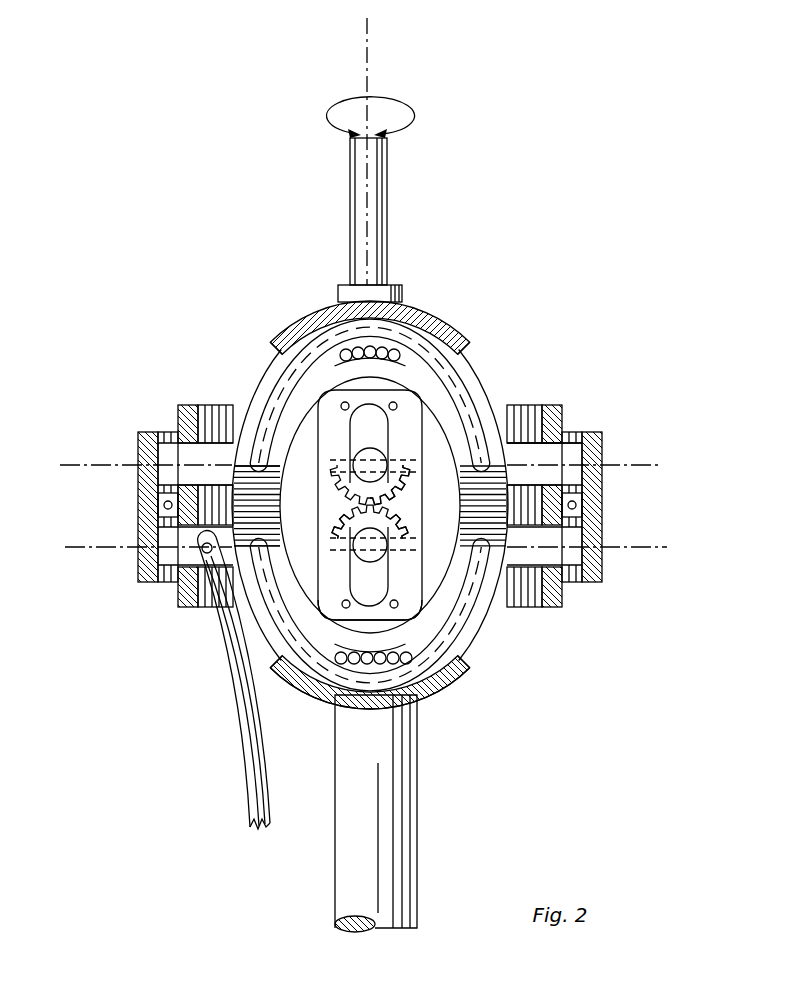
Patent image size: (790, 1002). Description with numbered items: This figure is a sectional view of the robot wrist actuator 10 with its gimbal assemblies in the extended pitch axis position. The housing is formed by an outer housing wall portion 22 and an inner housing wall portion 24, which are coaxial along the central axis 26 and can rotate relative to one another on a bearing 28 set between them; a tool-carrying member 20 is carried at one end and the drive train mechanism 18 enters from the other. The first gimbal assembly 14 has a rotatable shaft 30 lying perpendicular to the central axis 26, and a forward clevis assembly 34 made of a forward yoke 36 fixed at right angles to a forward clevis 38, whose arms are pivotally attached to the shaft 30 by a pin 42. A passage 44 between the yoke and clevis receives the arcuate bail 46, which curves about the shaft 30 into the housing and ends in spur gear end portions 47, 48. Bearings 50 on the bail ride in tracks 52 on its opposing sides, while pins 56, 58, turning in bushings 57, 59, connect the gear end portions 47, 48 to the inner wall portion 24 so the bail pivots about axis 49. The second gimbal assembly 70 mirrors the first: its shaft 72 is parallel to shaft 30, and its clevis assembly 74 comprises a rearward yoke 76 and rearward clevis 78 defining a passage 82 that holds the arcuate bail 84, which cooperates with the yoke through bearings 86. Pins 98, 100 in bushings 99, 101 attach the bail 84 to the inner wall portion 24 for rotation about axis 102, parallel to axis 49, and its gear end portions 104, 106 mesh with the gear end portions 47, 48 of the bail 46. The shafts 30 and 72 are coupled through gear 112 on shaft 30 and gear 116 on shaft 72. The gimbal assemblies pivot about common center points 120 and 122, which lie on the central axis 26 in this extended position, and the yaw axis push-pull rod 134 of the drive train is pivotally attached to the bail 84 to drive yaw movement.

The robot wrist actuator 10 is at (566, 332).
The first gimbal assembly 14 is at (477, 326).
The drive train mechanism 18 is at (423, 821).
The tool-carrying member 20 is at (391, 182).
The outer housing wall portion 22 is at (609, 510).
The inner housing wall portion 24 is at (576, 401).
The central axis 26 is at (369, 58).
The bearing 28 is at (581, 500).
The rotatable shaft 30 is at (369, 443).
The forward clevis assembly 34 is at (283, 320).
The forward yoke 36 is at (441, 319).
The forward clevis 38 is at (412, 442).
The pin 42 is at (332, 487).
The passage 44 is at (462, 350).
The bail 46 is at (484, 397).
The gear end portion 47 is at (273, 470).
The gear end portion 48 is at (509, 473).
The axis 49 is at (643, 464).
The bearings 50 is at (381, 349).
The tracks 52 is at (282, 383).
The pin 56 is at (181, 449).
The bushing 57 is at (186, 404).
The pin 58 is at (551, 453).
The bushing 59 is at (551, 405).
The second gimbal assembly 70 is at (456, 701).
The shaft 72 is at (369, 566).
The clevis assembly 74 is at (489, 680).
The rearward yoke 76 is at (303, 693).
The rearward clevis 78 is at (410, 573).
The passage 82 is at (332, 543).
The bail 84 is at (492, 616).
The bearings 86 is at (366, 664).
The pin 98 is at (193, 552).
The bushing 99 is at (188, 608).
The pin 100 is at (561, 592).
The bushing 101 is at (549, 541).
The axis 102 is at (634, 551).
The gear end portion 104 is at (281, 512).
The gear end portion 106 is at (462, 516).
The gear 112 is at (412, 492).
The gear 116 is at (410, 534).
The center point 120 is at (412, 473).
The center point 122 is at (334, 565).
The yaw axis push-pull rod 134 is at (243, 752).